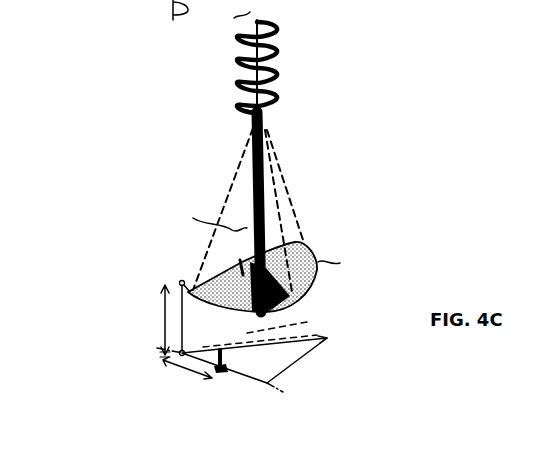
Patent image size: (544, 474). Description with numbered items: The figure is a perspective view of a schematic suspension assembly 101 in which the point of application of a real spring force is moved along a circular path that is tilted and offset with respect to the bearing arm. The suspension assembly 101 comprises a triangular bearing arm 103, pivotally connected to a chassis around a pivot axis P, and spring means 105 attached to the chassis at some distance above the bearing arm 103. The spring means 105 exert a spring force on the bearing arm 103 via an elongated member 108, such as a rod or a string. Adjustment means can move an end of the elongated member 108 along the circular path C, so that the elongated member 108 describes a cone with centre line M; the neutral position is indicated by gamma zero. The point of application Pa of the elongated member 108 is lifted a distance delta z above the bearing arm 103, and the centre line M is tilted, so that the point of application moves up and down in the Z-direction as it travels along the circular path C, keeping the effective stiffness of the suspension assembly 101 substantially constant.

The suspension assembly 101 is at (156, 145).
The bearing arm 103 is at (274, 368).
The spring means 105 is at (278, 67).
The elongated member 108 is at (267, 200).